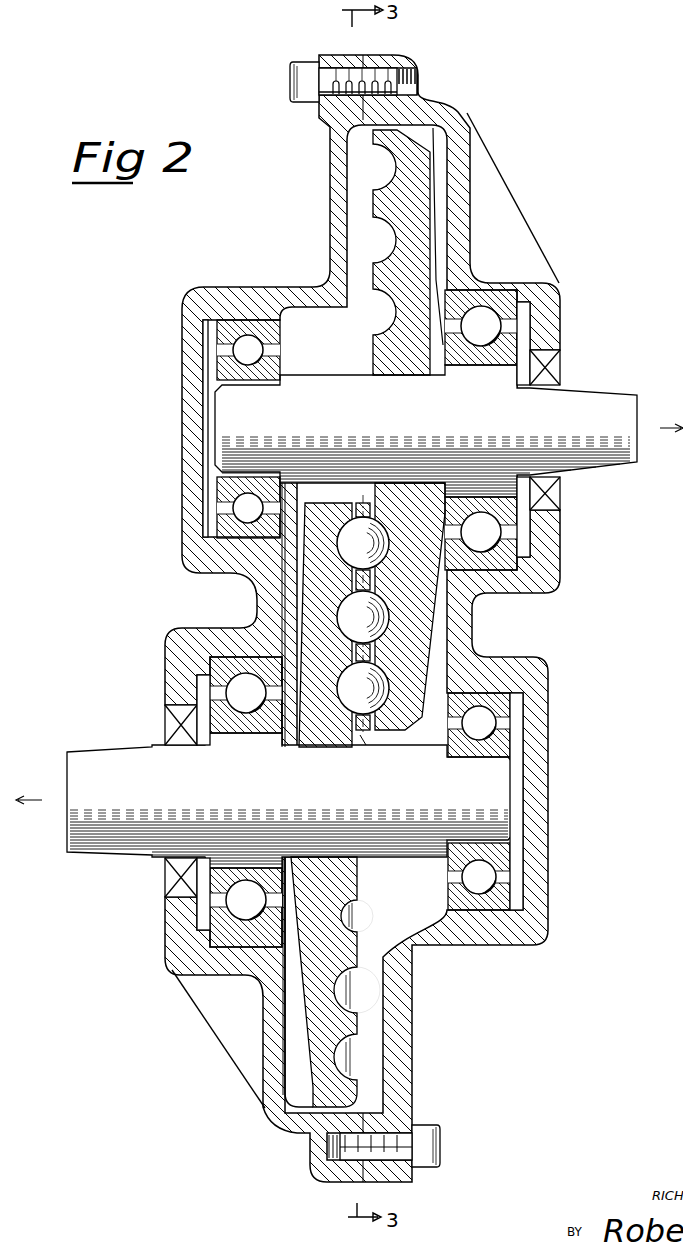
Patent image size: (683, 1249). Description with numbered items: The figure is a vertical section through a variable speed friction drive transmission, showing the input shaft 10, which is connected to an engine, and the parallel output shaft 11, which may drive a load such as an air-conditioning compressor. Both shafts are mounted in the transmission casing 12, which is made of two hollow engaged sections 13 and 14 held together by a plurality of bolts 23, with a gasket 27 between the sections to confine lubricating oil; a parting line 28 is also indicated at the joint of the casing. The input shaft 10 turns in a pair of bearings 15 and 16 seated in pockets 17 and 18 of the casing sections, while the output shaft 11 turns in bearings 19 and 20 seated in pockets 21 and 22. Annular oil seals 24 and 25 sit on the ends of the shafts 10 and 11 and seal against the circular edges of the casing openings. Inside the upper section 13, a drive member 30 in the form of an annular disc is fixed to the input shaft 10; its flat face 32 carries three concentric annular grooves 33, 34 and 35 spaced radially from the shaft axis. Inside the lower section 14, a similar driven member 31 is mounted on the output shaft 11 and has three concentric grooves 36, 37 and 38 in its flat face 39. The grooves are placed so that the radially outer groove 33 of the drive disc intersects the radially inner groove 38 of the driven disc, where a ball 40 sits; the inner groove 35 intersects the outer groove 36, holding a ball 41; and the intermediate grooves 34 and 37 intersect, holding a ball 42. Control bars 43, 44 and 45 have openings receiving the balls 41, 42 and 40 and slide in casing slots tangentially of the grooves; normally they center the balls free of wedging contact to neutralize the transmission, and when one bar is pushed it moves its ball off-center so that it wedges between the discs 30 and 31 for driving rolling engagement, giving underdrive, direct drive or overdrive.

The input shaft 10 is at (600, 392).
The output shaft 11 is at (116, 760).
The transmission casing 12 is at (515, 165).
The casing section 13 is at (462, 208).
The casing section 14 is at (278, 1108).
The bearing 15 is at (510, 300).
The bearing 16 is at (240, 333).
The pocket 17 is at (527, 322).
The pocket 18 is at (206, 345).
The bearing 19 is at (500, 916).
The bearing 20 is at (240, 932).
The pocket 21 is at (516, 862).
The pocket 22 is at (200, 902).
The bolt 23 is at (292, 72).
The oil seal 24 is at (561, 482).
The oil seal 25 is at (165, 880).
The gasket 27 is at (365, 58).
The parting line 28 is at (363, 1172).
The drive member 30 is at (412, 148).
The driven member 31 is at (305, 614).
The flat face 32 is at (375, 213).
The groove 33 is at (375, 168).
The groove 34 is at (378, 240).
The groove 35 is at (378, 312).
The groove 36 is at (350, 1055).
The groove 37 is at (350, 988).
The groove 38 is at (348, 930).
The flat face 39 is at (352, 1022).
The ball 40 is at (388, 676).
The ball 41 is at (384, 540).
The ball 42 is at (388, 600).
The control bar 43 is at (352, 520).
The control bar 44 is at (352, 648).
The control bar 45 is at (363, 730).